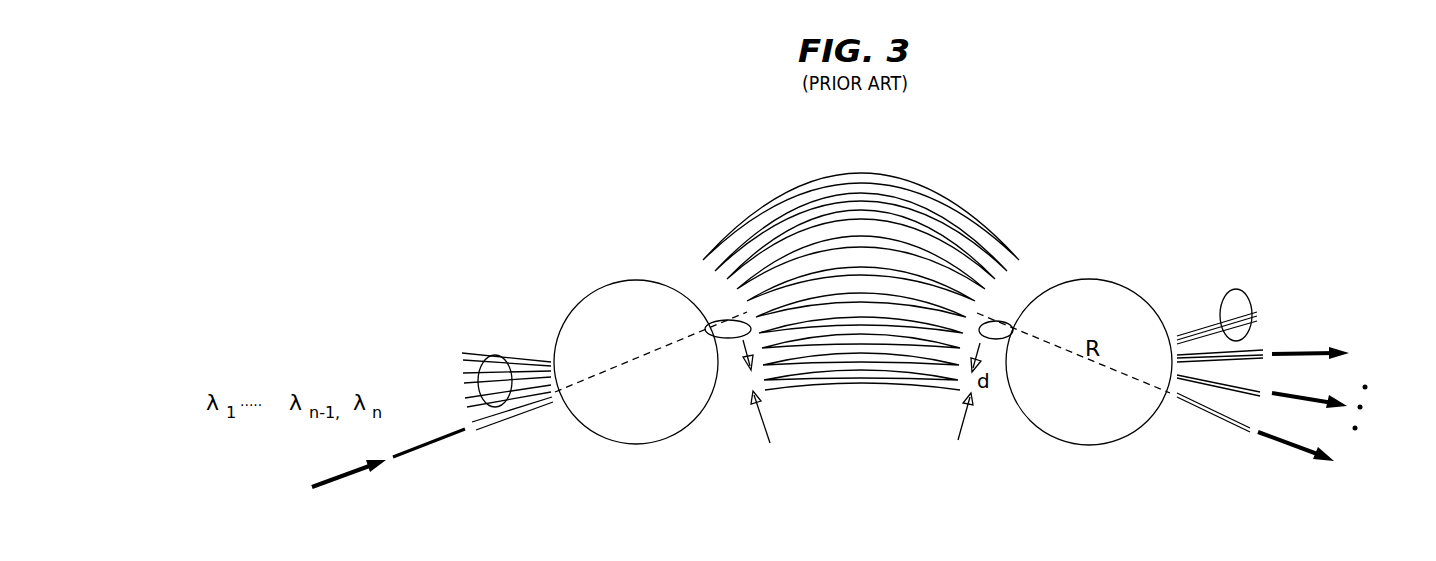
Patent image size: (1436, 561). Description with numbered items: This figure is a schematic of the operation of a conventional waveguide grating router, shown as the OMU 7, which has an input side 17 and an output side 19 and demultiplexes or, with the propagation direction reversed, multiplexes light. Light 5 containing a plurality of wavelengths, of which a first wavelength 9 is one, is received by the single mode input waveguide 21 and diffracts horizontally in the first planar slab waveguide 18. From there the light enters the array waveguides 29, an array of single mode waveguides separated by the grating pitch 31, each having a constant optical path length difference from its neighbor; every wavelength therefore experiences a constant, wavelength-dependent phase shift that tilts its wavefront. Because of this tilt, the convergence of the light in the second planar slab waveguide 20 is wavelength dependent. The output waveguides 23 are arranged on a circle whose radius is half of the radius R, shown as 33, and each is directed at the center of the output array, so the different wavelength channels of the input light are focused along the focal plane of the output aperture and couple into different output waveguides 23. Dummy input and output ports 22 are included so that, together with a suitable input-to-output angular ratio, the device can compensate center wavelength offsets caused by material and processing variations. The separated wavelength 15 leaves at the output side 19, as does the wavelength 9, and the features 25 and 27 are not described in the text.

The light 5 is at (333, 476).
The optical multiplexing unit (OMU) 7 is at (873, 260).
The wavelength 9 is at (1380, 358).
The n-th output wavelength 15 is at (1376, 468).
The input side 17 is at (412, 376).
The input slab waveguide 18 is at (641, 446).
The output side 19 is at (1310, 308).
The output slab waveguide 20 is at (1085, 446).
The input waveguide 21 is at (502, 418).
The dummy input and output ports 22 is at (478, 368).
The output waveguides 23 is at (1188, 330).
The first lens radius 25 is at (626, 279).
The second lens radius 27 is at (1102, 279).
The array waveguides 29 is at (828, 178).
The grating pitch 31 is at (740, 394).
The radius R 33 is at (629, 366).